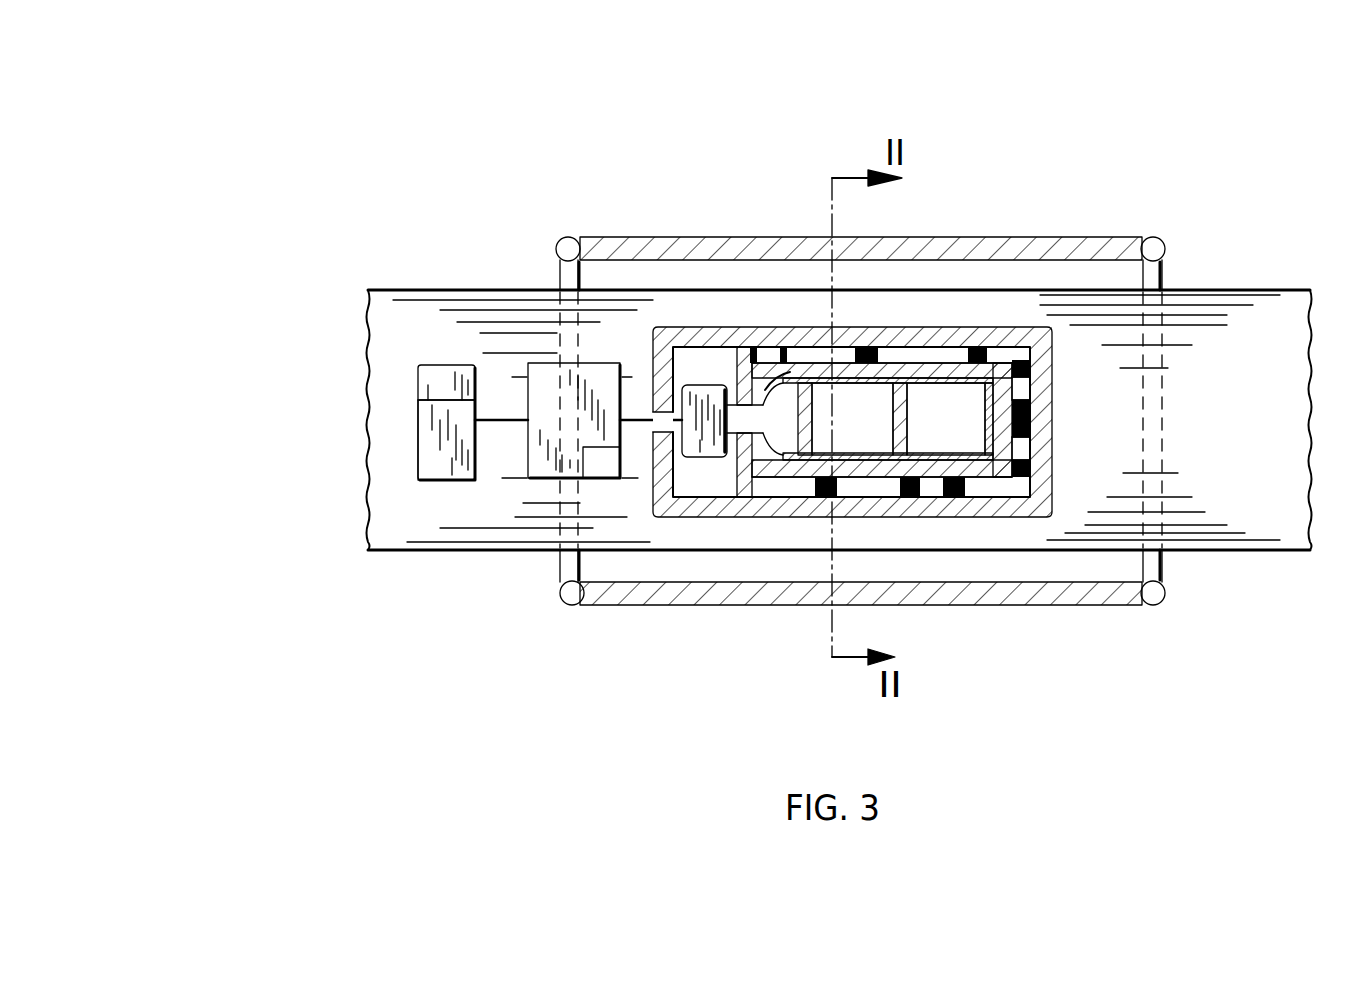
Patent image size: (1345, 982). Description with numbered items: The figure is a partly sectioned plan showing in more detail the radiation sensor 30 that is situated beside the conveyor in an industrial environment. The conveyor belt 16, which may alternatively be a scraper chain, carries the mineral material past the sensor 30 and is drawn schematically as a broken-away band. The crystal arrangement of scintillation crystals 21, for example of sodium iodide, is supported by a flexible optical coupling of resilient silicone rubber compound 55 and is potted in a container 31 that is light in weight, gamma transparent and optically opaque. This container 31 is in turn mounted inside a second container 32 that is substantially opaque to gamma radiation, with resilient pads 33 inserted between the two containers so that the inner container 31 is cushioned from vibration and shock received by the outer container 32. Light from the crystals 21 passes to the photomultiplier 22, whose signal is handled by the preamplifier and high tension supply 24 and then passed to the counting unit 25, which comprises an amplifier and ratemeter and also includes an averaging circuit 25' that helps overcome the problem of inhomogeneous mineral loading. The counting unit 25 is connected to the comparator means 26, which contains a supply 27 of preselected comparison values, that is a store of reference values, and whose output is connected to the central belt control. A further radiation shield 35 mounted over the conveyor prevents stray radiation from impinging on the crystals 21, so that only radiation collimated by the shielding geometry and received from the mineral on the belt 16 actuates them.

The conveyor belt 16 is at (513, 320).
The scintillation crystals 21 is at (862, 425).
The photomultiplier 22 is at (783, 430).
The preamplifier and high tension supply 24 is at (707, 433).
The counting unit 25 is at (539, 364).
The averaging circuit 25' is at (536, 626).
The comparator means 26 is at (452, 448).
The supply for preselected comparison values 27 is at (437, 385).
The sensor 30 is at (1090, 330).
The container 31 is at (790, 370).
The container 32 is at (695, 338).
The resilient pads 33 is at (977, 350).
The radiation shield 35 is at (602, 247).
The resilient silicone rubber compound 55 is at (1005, 455).